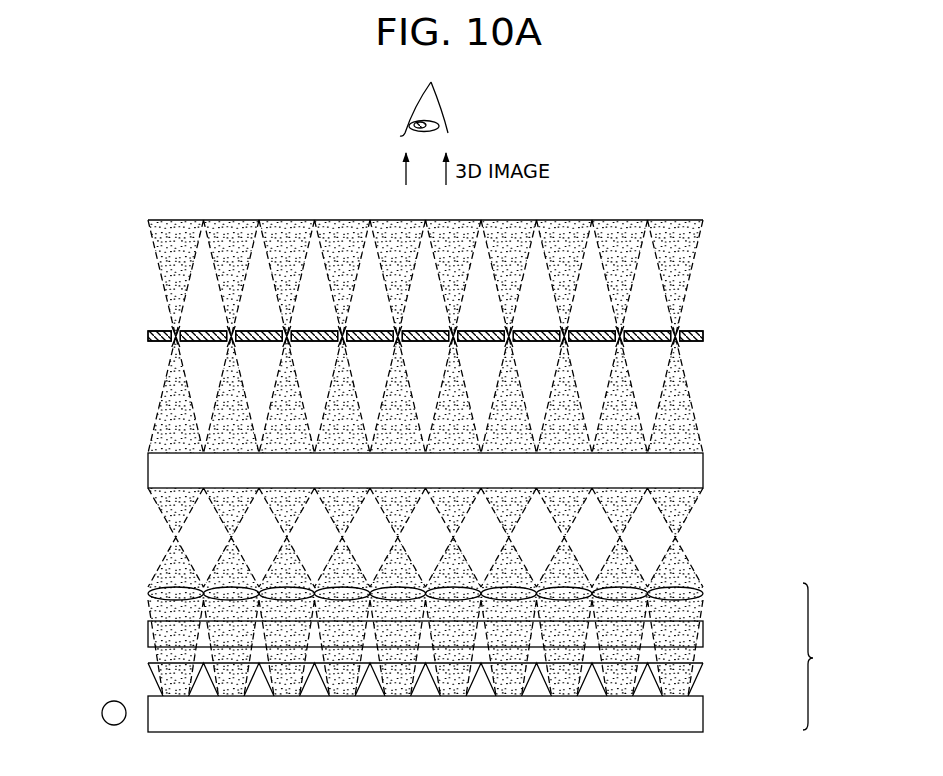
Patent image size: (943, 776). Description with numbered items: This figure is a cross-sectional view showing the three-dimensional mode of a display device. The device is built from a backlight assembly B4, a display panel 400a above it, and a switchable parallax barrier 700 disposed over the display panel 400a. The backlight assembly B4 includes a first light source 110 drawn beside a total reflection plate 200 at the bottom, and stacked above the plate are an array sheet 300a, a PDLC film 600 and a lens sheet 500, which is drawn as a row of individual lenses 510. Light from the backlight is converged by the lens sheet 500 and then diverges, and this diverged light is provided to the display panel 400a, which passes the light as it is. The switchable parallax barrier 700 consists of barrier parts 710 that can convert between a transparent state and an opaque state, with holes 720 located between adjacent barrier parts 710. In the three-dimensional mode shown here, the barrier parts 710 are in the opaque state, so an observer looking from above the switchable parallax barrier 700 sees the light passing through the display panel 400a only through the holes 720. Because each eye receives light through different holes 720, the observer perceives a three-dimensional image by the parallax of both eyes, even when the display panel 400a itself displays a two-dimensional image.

The switchable parallax barrier 700 is at (463, 340).
The barrier parts 710 is at (703, 336).
The holes 720 is at (678, 346).
The display panel 400a is at (703, 470).
The lens sheet 500 is at (418, 580).
The lens 510 is at (703, 593).
The PDLC film 600 is at (703, 633).
The array sheet 300a is at (710, 679).
The total reflection plate 200 is at (703, 715).
The first light source 110 is at (102, 713).
The backlight assembly B4 is at (823, 656).